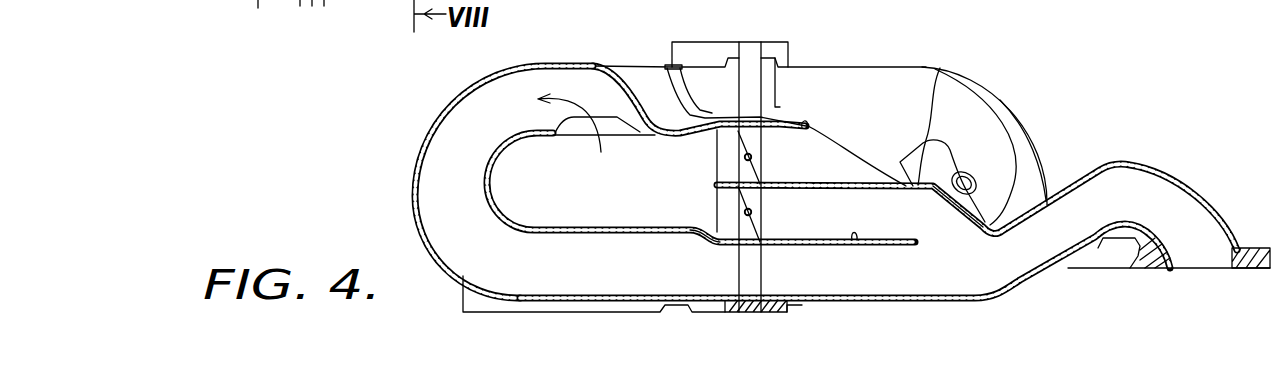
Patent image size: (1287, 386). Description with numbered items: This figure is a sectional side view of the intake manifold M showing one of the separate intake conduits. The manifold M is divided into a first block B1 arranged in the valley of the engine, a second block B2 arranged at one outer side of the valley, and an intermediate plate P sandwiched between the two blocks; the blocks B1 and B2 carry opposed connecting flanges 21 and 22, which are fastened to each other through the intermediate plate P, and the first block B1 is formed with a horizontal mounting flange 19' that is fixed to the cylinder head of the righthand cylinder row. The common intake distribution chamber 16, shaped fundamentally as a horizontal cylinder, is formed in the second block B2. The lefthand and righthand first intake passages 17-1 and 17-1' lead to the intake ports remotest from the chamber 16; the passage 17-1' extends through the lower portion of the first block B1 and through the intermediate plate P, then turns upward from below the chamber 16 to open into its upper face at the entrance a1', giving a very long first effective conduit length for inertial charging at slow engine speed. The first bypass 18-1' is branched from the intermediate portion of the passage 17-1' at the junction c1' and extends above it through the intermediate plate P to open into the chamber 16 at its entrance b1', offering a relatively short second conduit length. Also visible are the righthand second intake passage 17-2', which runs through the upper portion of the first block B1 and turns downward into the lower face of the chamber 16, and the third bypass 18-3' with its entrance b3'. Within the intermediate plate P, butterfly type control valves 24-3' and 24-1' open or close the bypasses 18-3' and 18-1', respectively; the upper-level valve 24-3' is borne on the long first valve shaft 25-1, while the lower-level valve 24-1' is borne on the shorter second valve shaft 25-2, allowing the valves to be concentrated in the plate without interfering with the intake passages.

The intake distribution chamber 16 is at (631, 196).
The first intake passage 17-1 is at (486, 182).
The first intake passage 17-1' is at (895, 237).
The second intake passage 17-2' is at (1044, 145).
The first bypass 18-1' is at (872, 259).
The third bypass 18-3' is at (807, 110).
The mounting flange 19' is at (1253, 245).
The connecting flange 21 is at (778, 58).
The connecting flange 22 is at (730, 57).
The control valve 24-1' is at (778, 214).
The control valve 24-3' is at (778, 157).
The first valve shaft 25-1 is at (745, 158).
The second valve shaft 25-2 is at (745, 212).
The intermediate plate P is at (752, 42).
The intake manifold M is at (843, 67).
The first block B1 is at (916, 72).
The second block B2 is at (556, 66).
The entrance a1' is at (589, 132).
The entrance b1' is at (697, 248).
The entrance b3' is at (683, 168).
The junction c1' is at (958, 235).